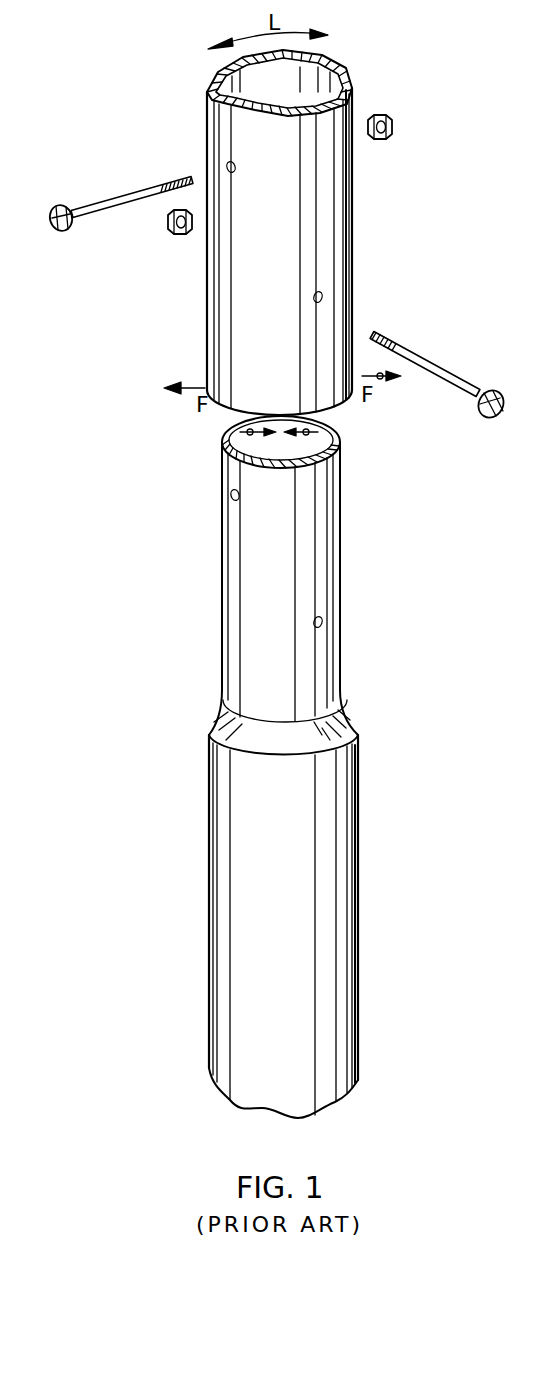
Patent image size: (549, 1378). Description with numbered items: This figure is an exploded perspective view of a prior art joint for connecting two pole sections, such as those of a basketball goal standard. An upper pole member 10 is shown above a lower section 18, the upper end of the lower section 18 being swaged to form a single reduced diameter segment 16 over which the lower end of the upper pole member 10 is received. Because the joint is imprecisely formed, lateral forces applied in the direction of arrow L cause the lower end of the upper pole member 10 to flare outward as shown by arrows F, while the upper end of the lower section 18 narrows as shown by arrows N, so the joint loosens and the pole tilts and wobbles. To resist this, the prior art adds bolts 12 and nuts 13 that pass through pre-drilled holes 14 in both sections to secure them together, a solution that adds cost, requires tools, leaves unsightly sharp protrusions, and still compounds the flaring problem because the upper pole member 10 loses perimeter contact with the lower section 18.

The upper pole member 10 is at (333, 218).
The bolt 12 is at (112, 200).
The nut 13 is at (166, 229).
The pre-drilled hole 14 is at (236, 169).
The single reduced diameter segment 16 is at (346, 683).
The lower section 18 is at (340, 853).